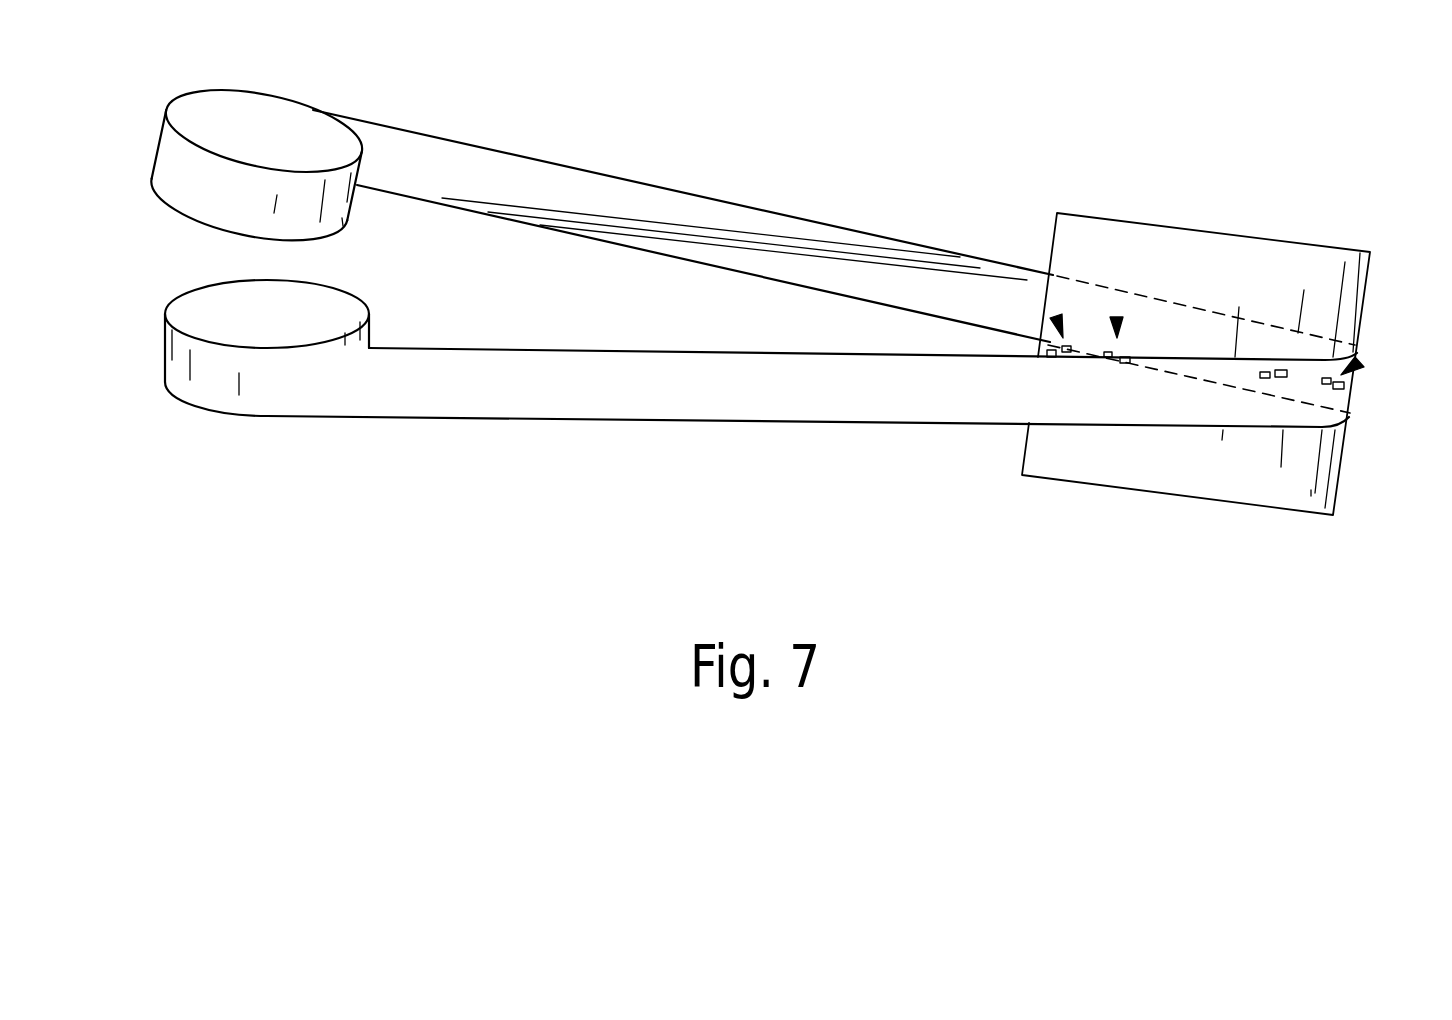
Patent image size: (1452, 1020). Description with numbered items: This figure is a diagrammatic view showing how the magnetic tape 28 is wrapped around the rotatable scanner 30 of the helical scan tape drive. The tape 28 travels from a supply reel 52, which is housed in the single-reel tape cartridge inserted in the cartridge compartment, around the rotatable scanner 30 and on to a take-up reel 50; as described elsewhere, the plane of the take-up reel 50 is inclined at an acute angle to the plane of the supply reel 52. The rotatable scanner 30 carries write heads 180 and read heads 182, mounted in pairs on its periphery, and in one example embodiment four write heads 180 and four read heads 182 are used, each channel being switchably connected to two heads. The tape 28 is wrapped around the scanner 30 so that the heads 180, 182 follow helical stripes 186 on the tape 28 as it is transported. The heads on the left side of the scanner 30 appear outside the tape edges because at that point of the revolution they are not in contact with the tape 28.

The magnetic tape 28 is at (689, 421).
The rotatable scanner 30 is at (1228, 255).
The take-up reel 50 is at (265, 122).
The supply reel 52 is at (317, 315).
The write head 180 is at (1117, 317).
The read head 182 is at (1052, 317).
The helical stripes 186 is at (700, 226).